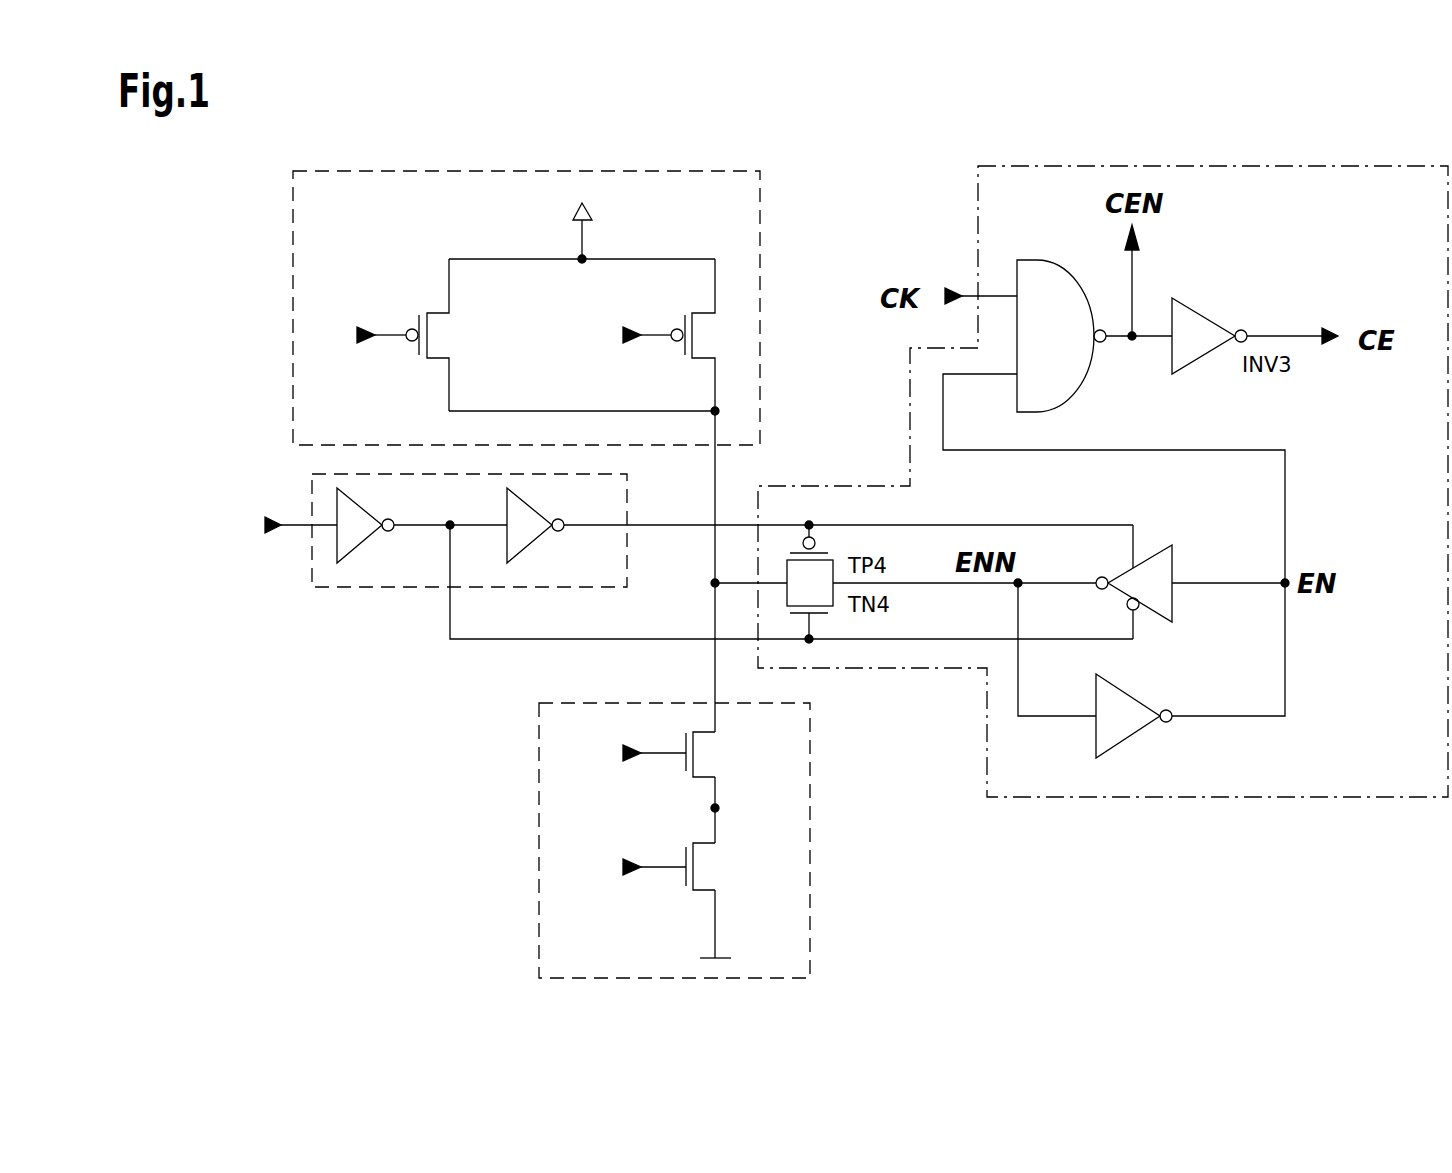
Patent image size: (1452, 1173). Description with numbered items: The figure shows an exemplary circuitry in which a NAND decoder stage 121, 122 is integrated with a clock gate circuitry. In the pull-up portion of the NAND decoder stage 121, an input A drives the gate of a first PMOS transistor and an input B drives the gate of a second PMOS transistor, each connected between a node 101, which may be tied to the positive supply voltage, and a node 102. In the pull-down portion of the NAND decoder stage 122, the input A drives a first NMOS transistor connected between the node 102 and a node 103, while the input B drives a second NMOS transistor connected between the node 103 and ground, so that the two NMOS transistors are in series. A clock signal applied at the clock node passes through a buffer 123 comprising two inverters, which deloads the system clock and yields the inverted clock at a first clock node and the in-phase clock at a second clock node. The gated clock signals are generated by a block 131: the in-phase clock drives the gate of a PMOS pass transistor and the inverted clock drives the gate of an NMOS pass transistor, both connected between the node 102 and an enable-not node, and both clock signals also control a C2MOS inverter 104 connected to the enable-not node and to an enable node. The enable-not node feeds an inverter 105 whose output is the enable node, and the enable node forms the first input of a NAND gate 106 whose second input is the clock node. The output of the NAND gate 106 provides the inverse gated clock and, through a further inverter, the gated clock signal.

The node 101 is at (562, 224).
The node 102 is at (726, 585).
The node 103 is at (739, 810).
The C2MOS inverter 104 is at (1132, 578).
The inverter 105 is at (1134, 728).
The NAND gate 106 is at (1061, 322).
The NAND decoder stage 121 is at (503, 308).
The NAND decoder stage 122 is at (647, 840).
The buffer 123 is at (412, 548).
The block 131 is at (1103, 502).